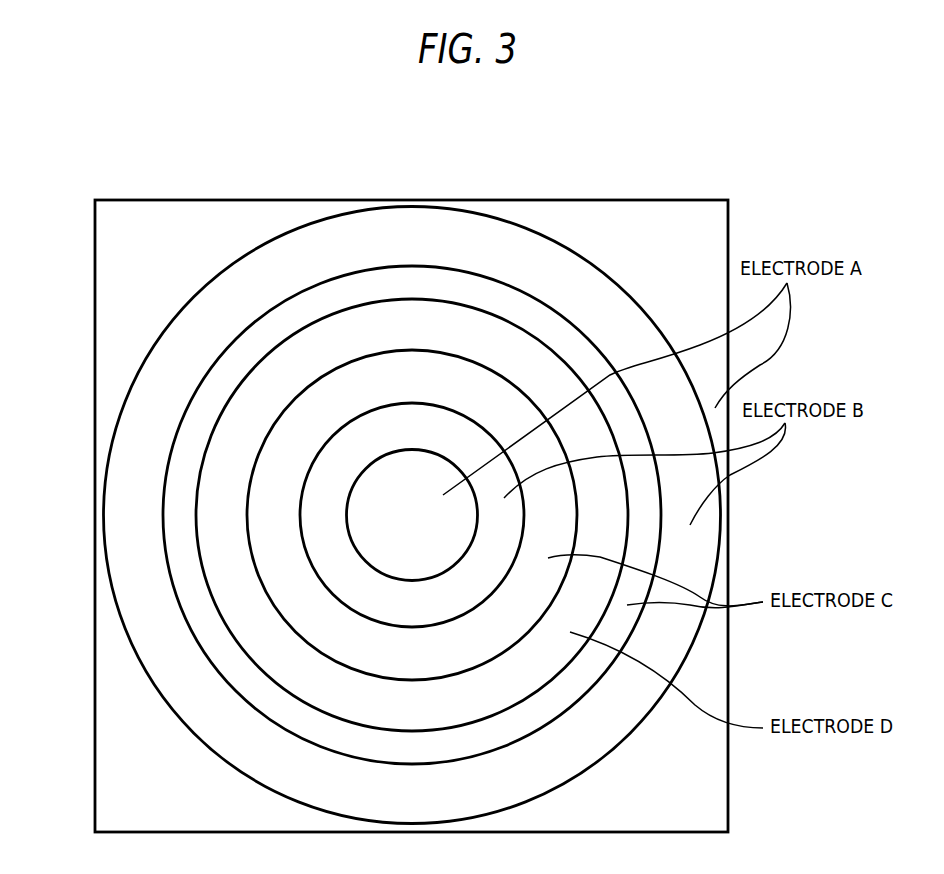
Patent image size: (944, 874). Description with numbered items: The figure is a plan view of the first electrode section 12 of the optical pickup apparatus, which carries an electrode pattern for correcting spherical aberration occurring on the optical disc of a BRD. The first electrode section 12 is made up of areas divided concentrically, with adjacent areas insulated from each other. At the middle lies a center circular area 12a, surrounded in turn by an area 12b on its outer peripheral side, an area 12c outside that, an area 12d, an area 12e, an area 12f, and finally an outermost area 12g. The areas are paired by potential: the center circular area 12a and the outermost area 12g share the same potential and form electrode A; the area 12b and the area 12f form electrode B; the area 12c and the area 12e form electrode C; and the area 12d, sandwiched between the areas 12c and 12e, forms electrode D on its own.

The first electrode section 12 is at (595, 197).
The center circular area 12a is at (353, 522).
The area on the outer peripheral side of the circular area 12b is at (357, 442).
The area on the outer peripheral side of area 12b 12c is at (305, 407).
The area sandwiched between areas 12c and 12e 12d is at (337, 325).
The area on the inner peripheral side of area 12f 12e is at (383, 278).
The area on the inner peripheral side of the outermost area 12f is at (408, 218).
The outermost area 12g is at (717, 224).